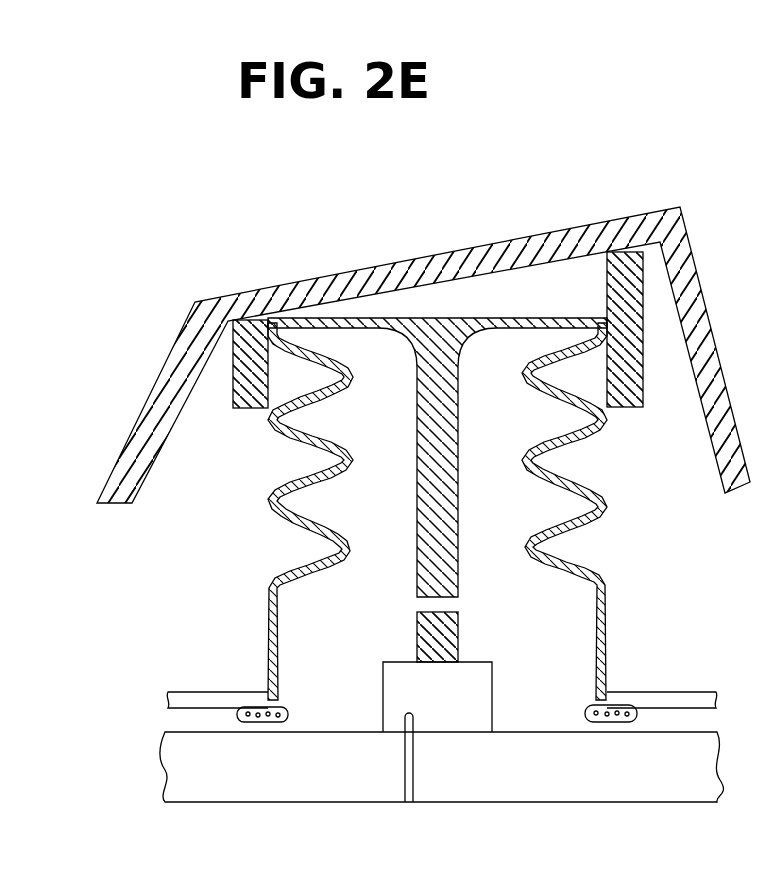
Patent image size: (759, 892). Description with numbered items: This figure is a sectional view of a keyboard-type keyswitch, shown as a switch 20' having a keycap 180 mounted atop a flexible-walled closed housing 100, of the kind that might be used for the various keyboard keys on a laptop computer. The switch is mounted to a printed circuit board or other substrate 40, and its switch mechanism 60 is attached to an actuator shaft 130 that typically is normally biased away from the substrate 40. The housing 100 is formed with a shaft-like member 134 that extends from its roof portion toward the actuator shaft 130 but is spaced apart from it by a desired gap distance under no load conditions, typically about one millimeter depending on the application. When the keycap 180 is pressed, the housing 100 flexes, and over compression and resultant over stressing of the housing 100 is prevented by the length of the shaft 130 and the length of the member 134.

The switch 20' is at (422, 498).
The keycap 180 is at (652, 212).
The housing 100 is at (270, 512).
The shaft-like member 134 is at (447, 575).
The actuator shaft 130 is at (423, 628).
The switch mechanism 60 is at (440, 710).
The substrate 40 is at (162, 770).